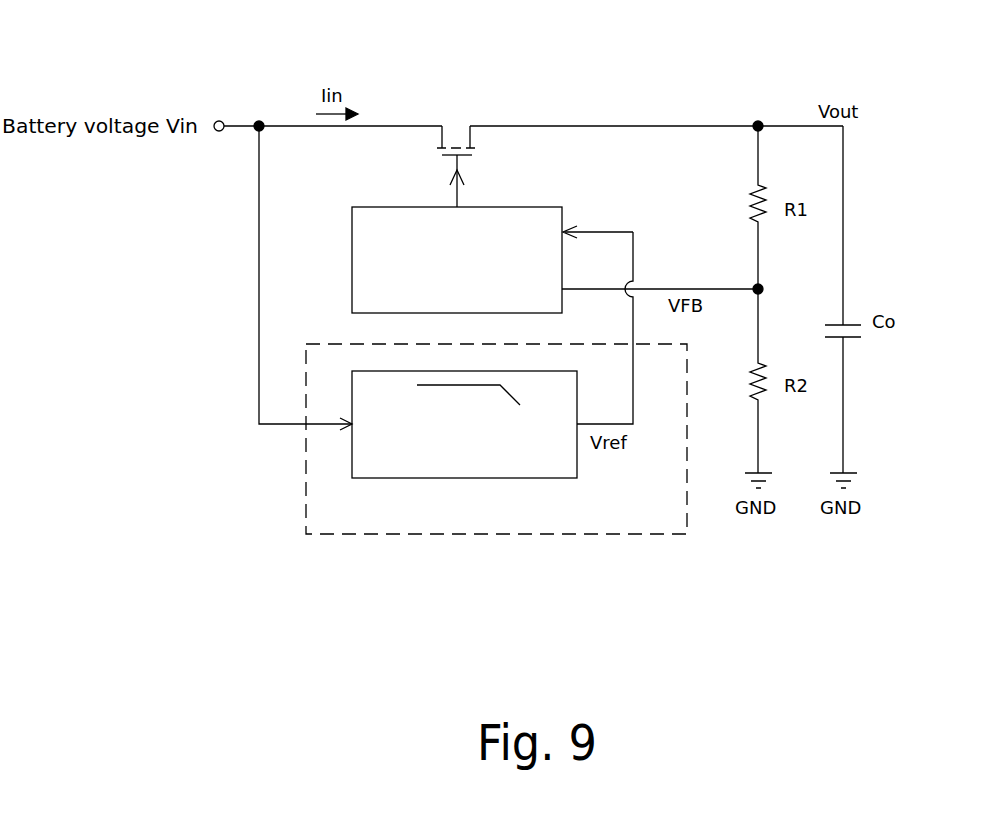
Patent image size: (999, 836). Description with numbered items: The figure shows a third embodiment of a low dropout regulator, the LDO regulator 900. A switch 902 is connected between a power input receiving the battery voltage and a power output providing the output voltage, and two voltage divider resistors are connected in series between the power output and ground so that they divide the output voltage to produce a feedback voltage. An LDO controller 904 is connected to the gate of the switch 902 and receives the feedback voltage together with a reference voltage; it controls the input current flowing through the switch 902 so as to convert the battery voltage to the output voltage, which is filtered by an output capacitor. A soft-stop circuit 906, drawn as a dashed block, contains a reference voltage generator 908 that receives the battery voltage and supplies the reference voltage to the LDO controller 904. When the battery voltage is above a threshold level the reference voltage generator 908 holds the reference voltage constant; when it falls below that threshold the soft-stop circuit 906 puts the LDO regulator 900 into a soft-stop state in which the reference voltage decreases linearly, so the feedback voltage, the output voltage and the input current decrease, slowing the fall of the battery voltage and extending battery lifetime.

The LDO regulator 900 is at (910, 112).
The switch 902 is at (450, 113).
The LDO controller 904 is at (525, 207).
The soft-stop circuit 906 is at (431, 468).
The reference voltage generator 908 is at (463, 478).